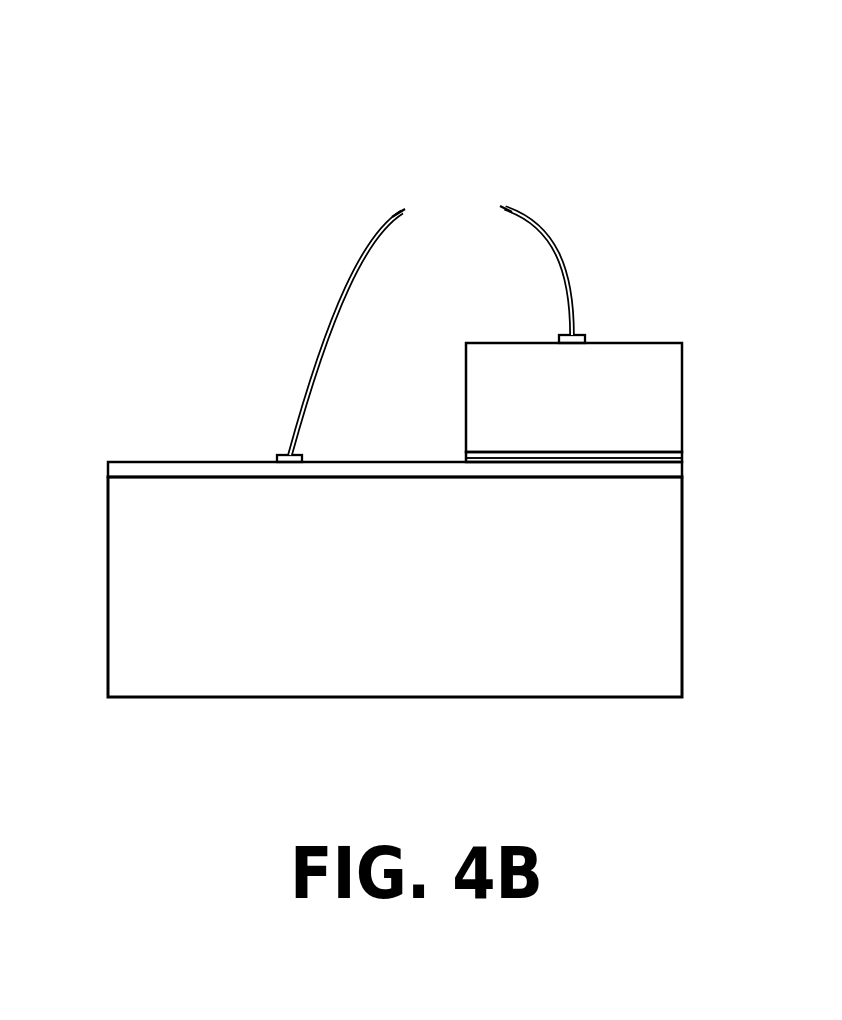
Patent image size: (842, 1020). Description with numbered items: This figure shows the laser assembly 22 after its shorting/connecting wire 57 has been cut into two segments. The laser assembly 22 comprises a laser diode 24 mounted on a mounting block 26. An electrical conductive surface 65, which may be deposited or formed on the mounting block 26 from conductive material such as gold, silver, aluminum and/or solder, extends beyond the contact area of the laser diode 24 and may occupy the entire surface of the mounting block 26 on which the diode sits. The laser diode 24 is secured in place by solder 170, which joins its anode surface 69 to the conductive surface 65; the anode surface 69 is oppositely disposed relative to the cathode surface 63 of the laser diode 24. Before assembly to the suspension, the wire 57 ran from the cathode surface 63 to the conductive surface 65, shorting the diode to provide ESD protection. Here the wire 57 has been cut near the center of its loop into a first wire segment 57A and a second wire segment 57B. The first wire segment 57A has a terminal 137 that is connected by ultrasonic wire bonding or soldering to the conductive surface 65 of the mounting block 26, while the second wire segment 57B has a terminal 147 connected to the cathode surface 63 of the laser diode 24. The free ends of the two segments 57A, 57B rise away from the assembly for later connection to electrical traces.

The laser assembly 22 is at (395, 77).
The laser diode 24 is at (712, 425).
The mounting block 26 is at (648, 652).
The shorting/connecting wire 57 is at (345, 203).
The first wire segment 57A is at (563, 238).
The second wire segment 57B is at (338, 285).
The cathode surface 63 is at (653, 342).
The electrical conductive surface 65 is at (147, 470).
The anode surface 69 is at (512, 452).
The terminal 137 is at (275, 458).
The terminal 147 is at (587, 335).
The solder 170 is at (675, 457).